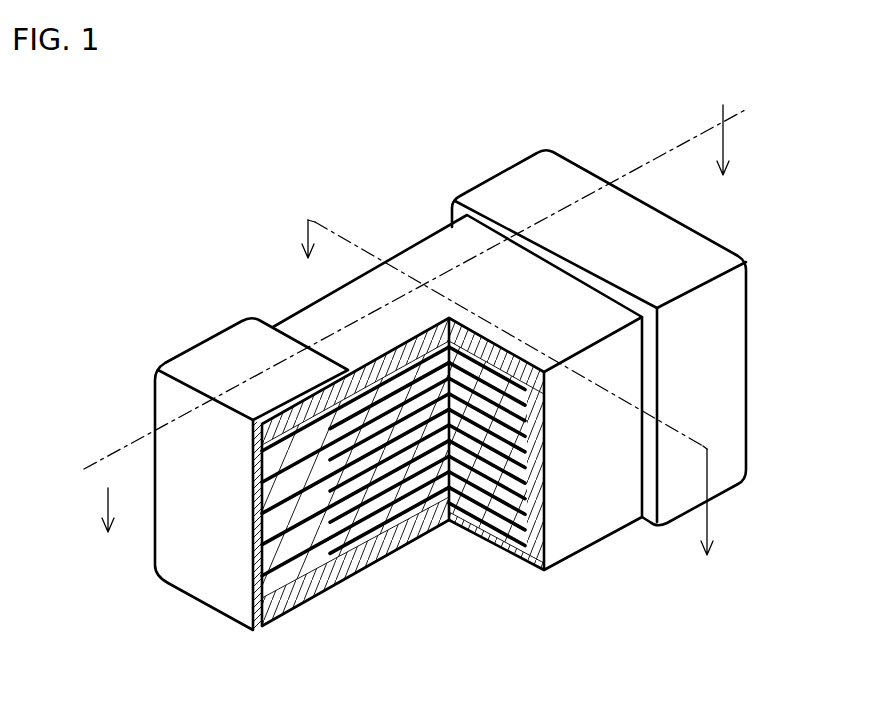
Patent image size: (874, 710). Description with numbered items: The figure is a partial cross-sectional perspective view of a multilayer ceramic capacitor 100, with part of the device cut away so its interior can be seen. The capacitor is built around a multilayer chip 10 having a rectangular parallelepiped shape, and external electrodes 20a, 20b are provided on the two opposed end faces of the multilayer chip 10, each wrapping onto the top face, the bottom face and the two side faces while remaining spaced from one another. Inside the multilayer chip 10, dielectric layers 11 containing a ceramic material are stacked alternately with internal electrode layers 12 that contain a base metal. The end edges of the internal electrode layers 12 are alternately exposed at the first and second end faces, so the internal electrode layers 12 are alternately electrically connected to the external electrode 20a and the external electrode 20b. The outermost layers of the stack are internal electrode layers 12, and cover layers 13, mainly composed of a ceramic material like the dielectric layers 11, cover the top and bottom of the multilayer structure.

The multilayer ceramic capacitor 100 is at (848, 81).
The multilayer chip 10 is at (290, 308).
The dielectric layer 11 is at (380, 505).
The internal electrode layer 12 is at (348, 538).
The cover layer 13 is at (422, 258).
The external electrode 20a is at (183, 347).
The external electrode 20b is at (506, 187).